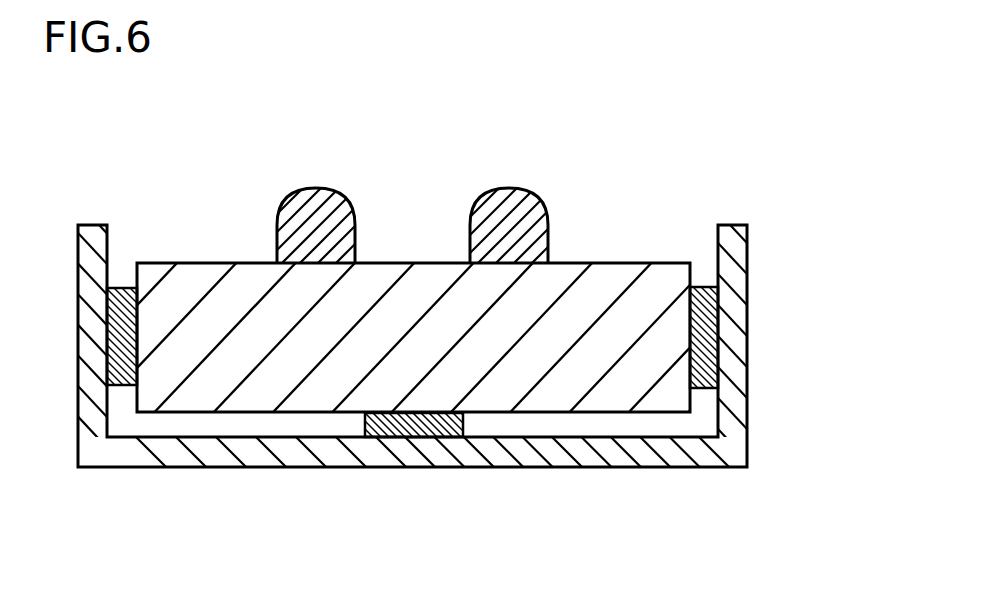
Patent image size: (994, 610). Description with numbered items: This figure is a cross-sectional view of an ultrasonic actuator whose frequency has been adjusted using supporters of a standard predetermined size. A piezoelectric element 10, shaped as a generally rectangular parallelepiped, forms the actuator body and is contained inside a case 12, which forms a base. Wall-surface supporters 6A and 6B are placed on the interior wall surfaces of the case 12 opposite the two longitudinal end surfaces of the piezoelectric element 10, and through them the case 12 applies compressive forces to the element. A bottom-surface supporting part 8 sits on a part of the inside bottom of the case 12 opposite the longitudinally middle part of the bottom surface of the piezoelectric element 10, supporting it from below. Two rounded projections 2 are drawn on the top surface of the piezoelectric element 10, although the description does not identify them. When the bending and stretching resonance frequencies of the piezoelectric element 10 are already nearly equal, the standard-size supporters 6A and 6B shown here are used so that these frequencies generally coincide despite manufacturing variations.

The bump electrodes 2 is at (410, 174).
The wall-surface supporter 6A is at (705, 345).
The wall-surface supporter 6B is at (122, 330).
The bottom-surface supporting part 8 is at (410, 428).
The piezoelectric element 10 is at (232, 385).
The case 12 is at (737, 330).